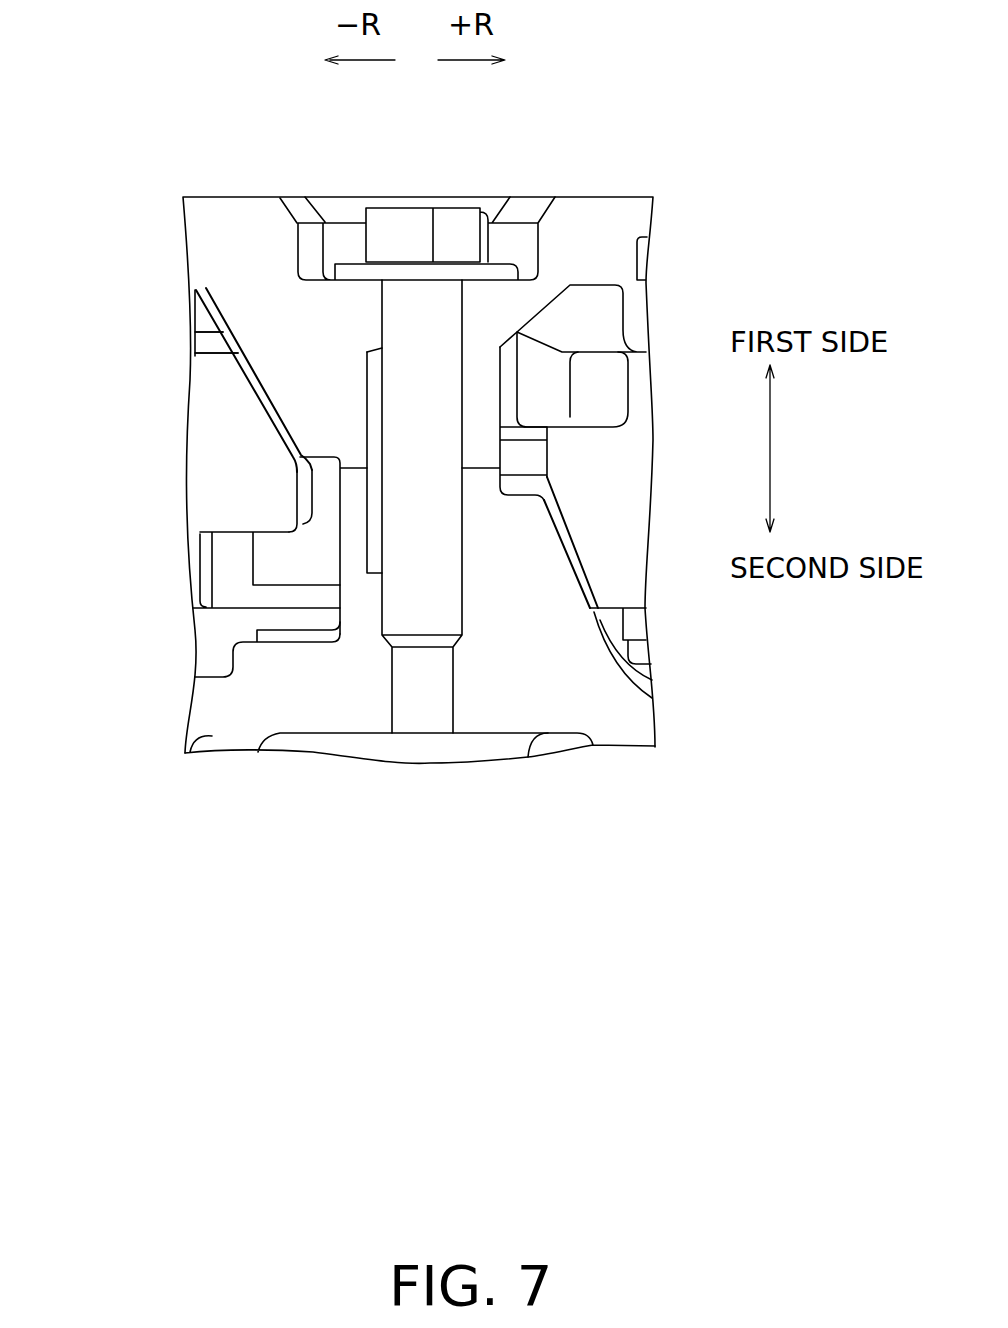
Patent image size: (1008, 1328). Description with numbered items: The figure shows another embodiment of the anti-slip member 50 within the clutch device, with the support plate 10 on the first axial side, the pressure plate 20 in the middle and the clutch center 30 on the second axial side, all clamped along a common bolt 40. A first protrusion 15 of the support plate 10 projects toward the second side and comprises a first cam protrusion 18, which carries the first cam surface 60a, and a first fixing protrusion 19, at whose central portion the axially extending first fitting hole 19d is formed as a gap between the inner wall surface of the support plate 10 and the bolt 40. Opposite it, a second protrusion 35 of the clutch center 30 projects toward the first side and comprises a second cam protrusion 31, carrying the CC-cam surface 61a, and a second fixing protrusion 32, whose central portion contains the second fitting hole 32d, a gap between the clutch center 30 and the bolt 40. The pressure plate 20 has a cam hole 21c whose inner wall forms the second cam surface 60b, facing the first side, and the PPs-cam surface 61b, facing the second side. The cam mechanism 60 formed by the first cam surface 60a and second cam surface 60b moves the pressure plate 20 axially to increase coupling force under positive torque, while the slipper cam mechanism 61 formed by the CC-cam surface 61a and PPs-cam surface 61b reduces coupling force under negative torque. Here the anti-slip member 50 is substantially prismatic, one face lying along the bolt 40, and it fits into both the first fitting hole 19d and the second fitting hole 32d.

The support plate 10 is at (638, 162).
The first protrusion 15 is at (355, 339).
The first cam protrusion 18 is at (311, 468).
The first fixing protrusion 19 is at (310, 483).
The first fitting hole 19d is at (272, 329).
The pressure plate 20 is at (154, 494).
The cam hole 21c is at (617, 445).
The clutch center 30 is at (170, 714).
The second cam protrusion 31 is at (528, 507).
The second fixing protrusion 32 is at (539, 467).
The second fitting hole 32d is at (360, 605).
The second protrusion 35 is at (519, 579).
The bolt 40 is at (406, 227).
The anti-slip member 50 is at (384, 553).
The cam mechanism 60 is at (227, 333).
The first cam surface 60a is at (253, 386).
The second cam surface 60b is at (278, 437).
The slipper cam mechanism 61 is at (607, 635).
The CC-cam surface 61a is at (567, 543).
The PPs-cam surface 61b is at (565, 582).